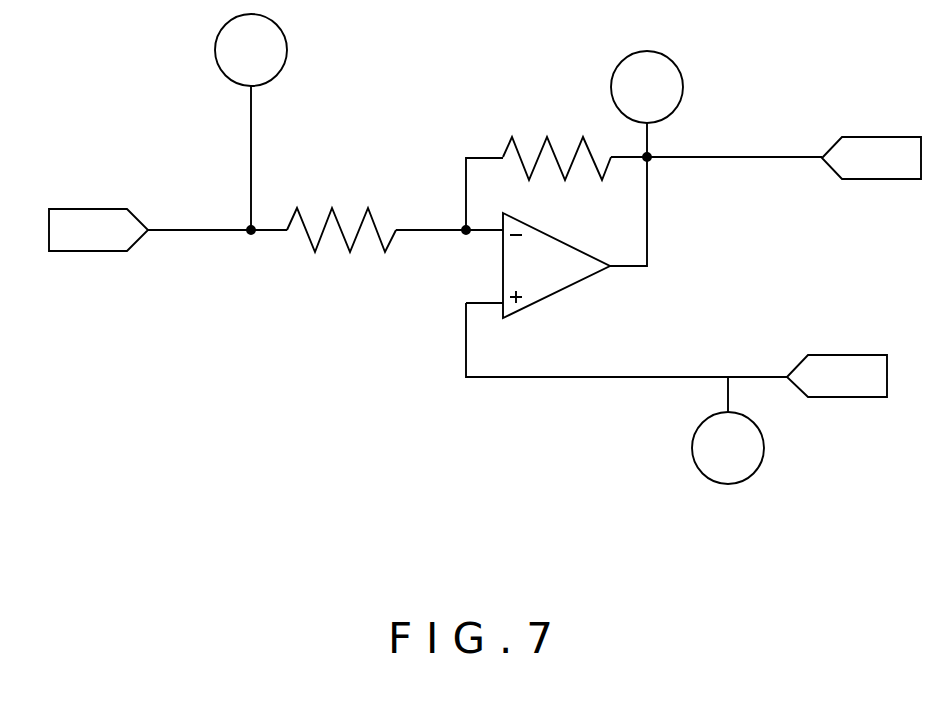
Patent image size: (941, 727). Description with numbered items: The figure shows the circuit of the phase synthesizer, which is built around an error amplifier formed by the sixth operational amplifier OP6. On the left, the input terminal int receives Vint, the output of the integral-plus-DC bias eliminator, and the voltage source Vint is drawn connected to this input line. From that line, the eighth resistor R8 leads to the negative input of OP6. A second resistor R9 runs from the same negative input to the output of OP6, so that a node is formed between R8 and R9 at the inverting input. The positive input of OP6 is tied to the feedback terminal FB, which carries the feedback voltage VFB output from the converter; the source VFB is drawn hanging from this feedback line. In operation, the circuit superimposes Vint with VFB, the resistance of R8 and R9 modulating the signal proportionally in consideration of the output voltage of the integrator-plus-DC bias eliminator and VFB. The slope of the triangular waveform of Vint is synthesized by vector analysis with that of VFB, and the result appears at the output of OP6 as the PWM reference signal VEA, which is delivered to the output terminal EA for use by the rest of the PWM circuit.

The eighth resistor R8 is at (341, 203).
The resistor R9 is at (557, 137).
The sixth operational amplifier OP6 is at (556, 270).
The output voltage of integral-plus-DC bias eliminator Vint is at (251, 50).
The input terminal for Vint int is at (98, 230).
The PWM reference signal VEA is at (647, 87).
The error amplifier output terminal EA is at (871, 158).
The feedback terminal FB is at (837, 376).
The feedback voltage VFB is at (728, 448).